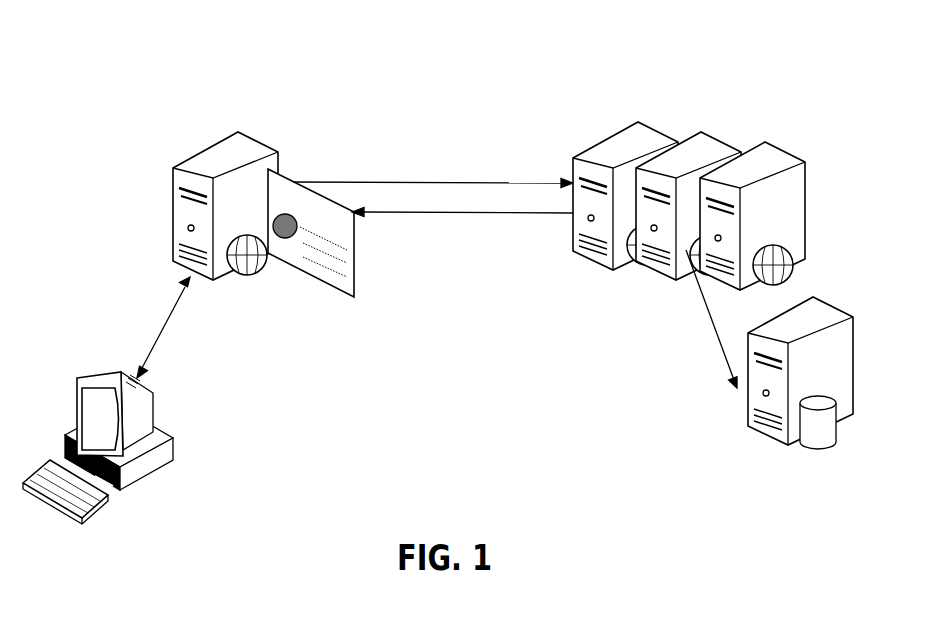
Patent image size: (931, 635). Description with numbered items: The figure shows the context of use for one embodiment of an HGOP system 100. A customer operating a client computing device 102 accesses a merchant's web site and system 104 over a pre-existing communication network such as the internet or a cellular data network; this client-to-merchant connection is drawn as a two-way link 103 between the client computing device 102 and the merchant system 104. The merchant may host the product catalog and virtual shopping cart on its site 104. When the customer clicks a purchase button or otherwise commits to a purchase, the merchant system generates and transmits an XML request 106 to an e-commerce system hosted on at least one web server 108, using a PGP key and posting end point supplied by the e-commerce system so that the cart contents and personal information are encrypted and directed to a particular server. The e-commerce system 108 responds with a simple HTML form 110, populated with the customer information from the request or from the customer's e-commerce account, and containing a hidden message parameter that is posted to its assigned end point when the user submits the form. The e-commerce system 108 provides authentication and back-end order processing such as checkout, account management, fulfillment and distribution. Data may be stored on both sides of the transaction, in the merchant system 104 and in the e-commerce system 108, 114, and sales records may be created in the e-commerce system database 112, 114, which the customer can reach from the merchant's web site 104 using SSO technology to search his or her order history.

The HGOP system 100 is at (255, 53).
The client computing device 102 is at (143, 477).
The client-server communication link 103 is at (157, 342).
The merchant's web site and system 104 is at (253, 137).
The XML request 106 is at (417, 182).
The web server hosting the e-commerce system 108 is at (713, 140).
The HTML form 110 is at (355, 220).
The e-commerce system database 112 is at (717, 323).
The e-commerce system database server 114 is at (760, 433).